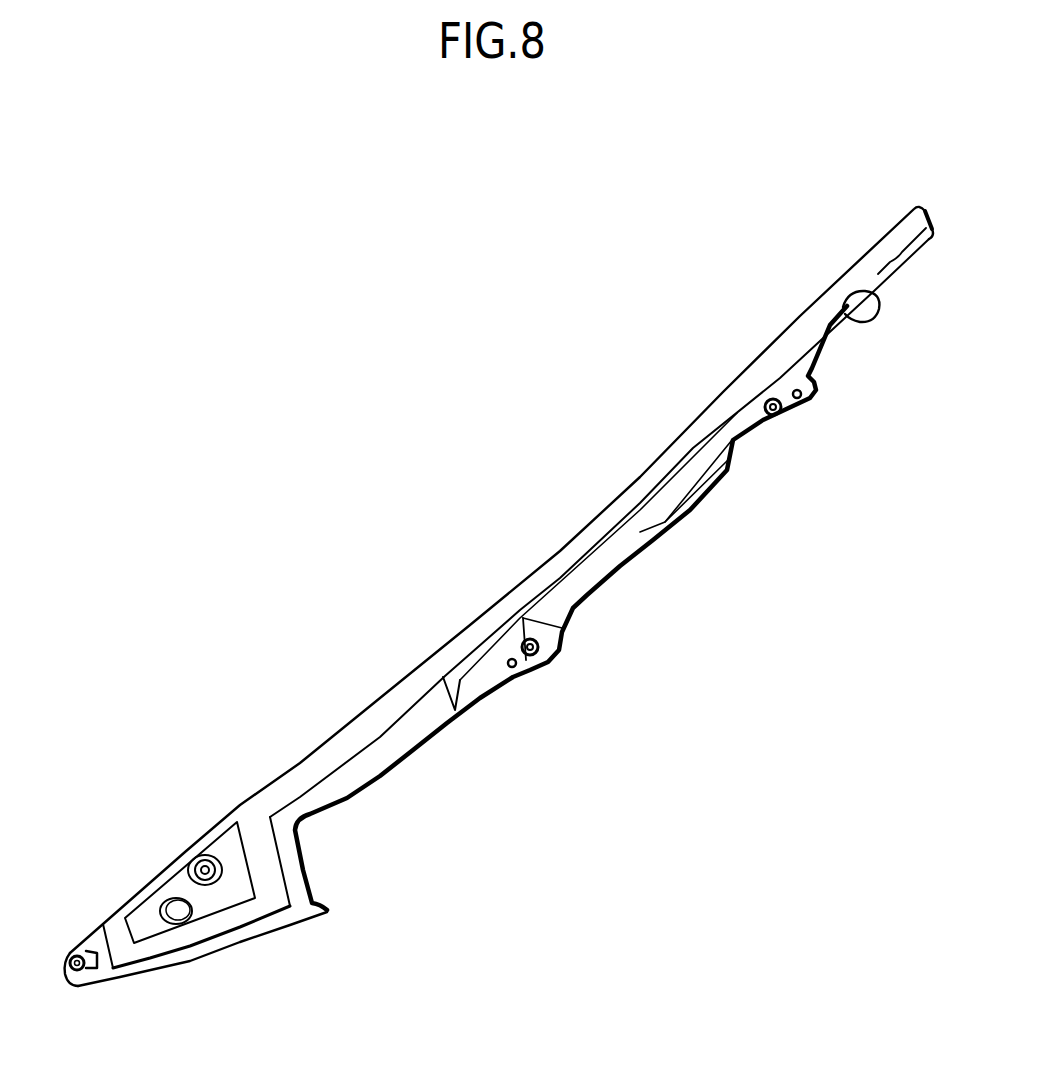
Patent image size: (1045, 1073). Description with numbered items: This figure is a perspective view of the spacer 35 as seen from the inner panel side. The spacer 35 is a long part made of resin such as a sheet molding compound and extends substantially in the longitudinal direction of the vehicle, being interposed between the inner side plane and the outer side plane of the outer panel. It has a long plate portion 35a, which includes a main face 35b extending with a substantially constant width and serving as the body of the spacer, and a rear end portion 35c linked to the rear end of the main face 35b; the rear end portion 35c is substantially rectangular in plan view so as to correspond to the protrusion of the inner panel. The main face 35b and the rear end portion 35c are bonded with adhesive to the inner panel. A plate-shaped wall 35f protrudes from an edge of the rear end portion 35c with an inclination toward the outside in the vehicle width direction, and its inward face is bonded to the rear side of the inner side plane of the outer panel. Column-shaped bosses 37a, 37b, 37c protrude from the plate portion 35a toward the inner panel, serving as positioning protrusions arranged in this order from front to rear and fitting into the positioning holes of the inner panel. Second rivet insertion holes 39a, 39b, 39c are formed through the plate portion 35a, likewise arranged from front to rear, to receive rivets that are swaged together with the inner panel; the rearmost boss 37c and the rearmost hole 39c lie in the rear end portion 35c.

The spacer 35 is at (602, 392).
The plate portion 35a is at (388, 611).
The main face 35b is at (355, 770).
The rear end portion 35c is at (262, 853).
The wall 35f is at (266, 925).
The boss 37a is at (769, 399).
The boss 37b is at (529, 638).
The boss 37c is at (75, 957).
The second rivet insertion hole 39a is at (800, 399).
The second rivet insertion hole 39b is at (514, 670).
The second rivet insertion hole 39c is at (195, 865).